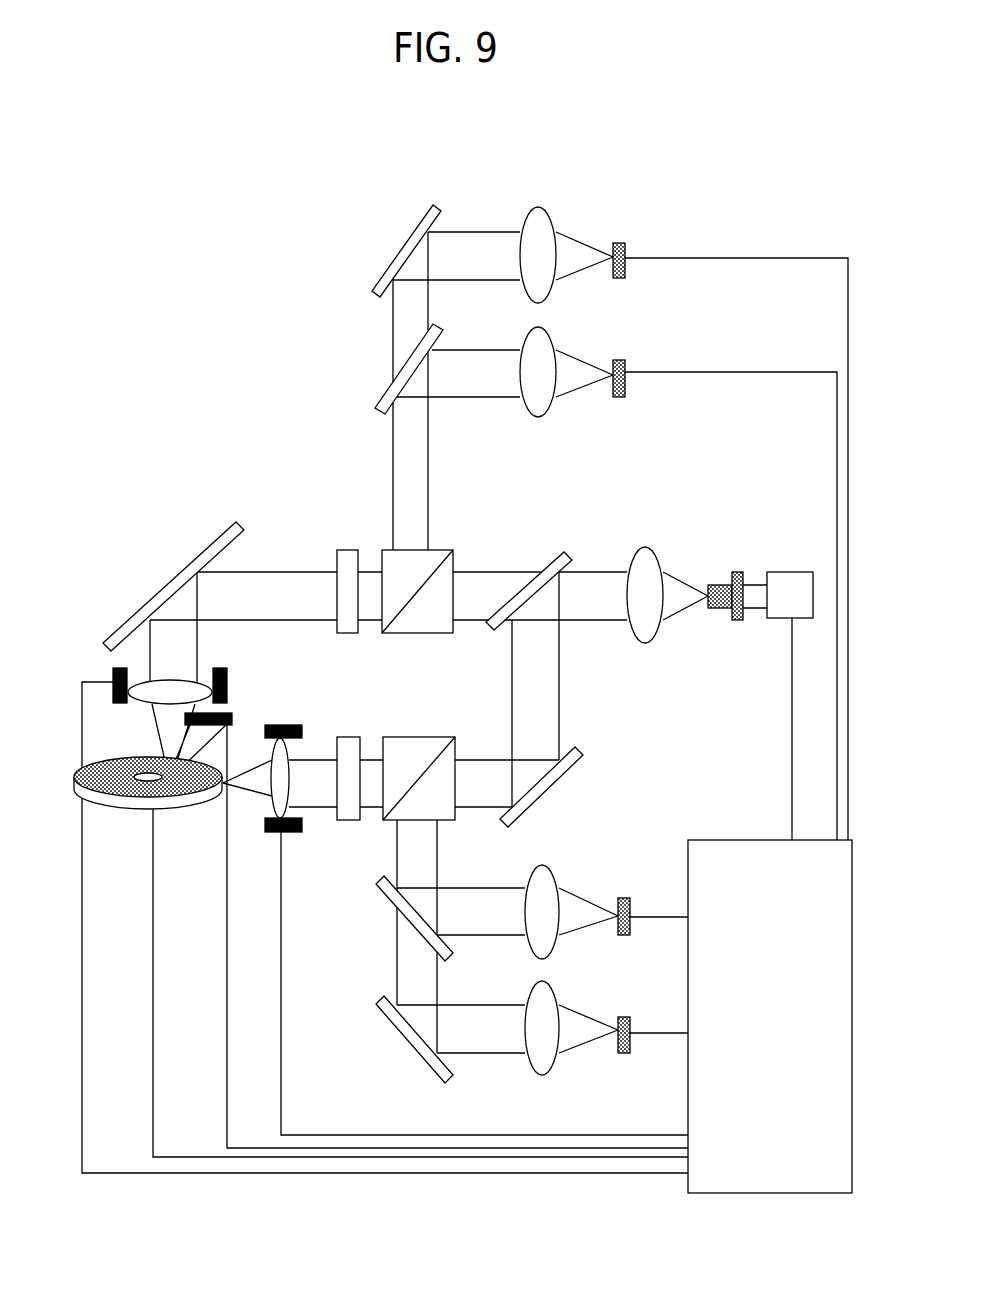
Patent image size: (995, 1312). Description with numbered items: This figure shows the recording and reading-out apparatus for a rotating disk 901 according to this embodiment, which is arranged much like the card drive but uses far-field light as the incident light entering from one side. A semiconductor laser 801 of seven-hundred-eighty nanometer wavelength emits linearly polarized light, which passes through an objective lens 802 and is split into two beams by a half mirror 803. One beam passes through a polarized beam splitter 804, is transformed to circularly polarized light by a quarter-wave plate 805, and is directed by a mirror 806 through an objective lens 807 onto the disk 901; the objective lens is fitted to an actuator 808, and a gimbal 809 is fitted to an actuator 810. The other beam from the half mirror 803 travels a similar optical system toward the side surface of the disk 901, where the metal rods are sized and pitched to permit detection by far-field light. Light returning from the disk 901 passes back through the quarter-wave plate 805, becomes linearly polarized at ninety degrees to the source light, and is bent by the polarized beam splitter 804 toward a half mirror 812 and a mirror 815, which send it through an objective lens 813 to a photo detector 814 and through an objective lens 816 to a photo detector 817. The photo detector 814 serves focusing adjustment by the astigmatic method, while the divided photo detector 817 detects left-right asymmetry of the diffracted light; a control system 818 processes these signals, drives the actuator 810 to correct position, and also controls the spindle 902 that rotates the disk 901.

The semiconductor laser 801 is at (718, 585).
The objective lens 802 is at (648, 565).
The half mirror 803 is at (553, 562).
The polarized beam splitter 804 is at (388, 555).
The quarter-wave plate 805 is at (340, 555).
The mirror 806 is at (220, 535).
The objective lens 807 is at (143, 683).
The actuator 808 is at (227, 672).
The gimbal 809 is at (192, 810).
The actuator 810 is at (232, 717).
The half mirror 812 is at (388, 397).
The objective lens 813 is at (540, 413).
The photo detector 814 is at (625, 390).
The mirror 815 is at (390, 260).
The objective lens 816 is at (533, 208).
The photo detector 817 is at (620, 243).
The control system 818 is at (770, 1016).
The disk 901 is at (132, 797).
The spindle 902 is at (143, 767).